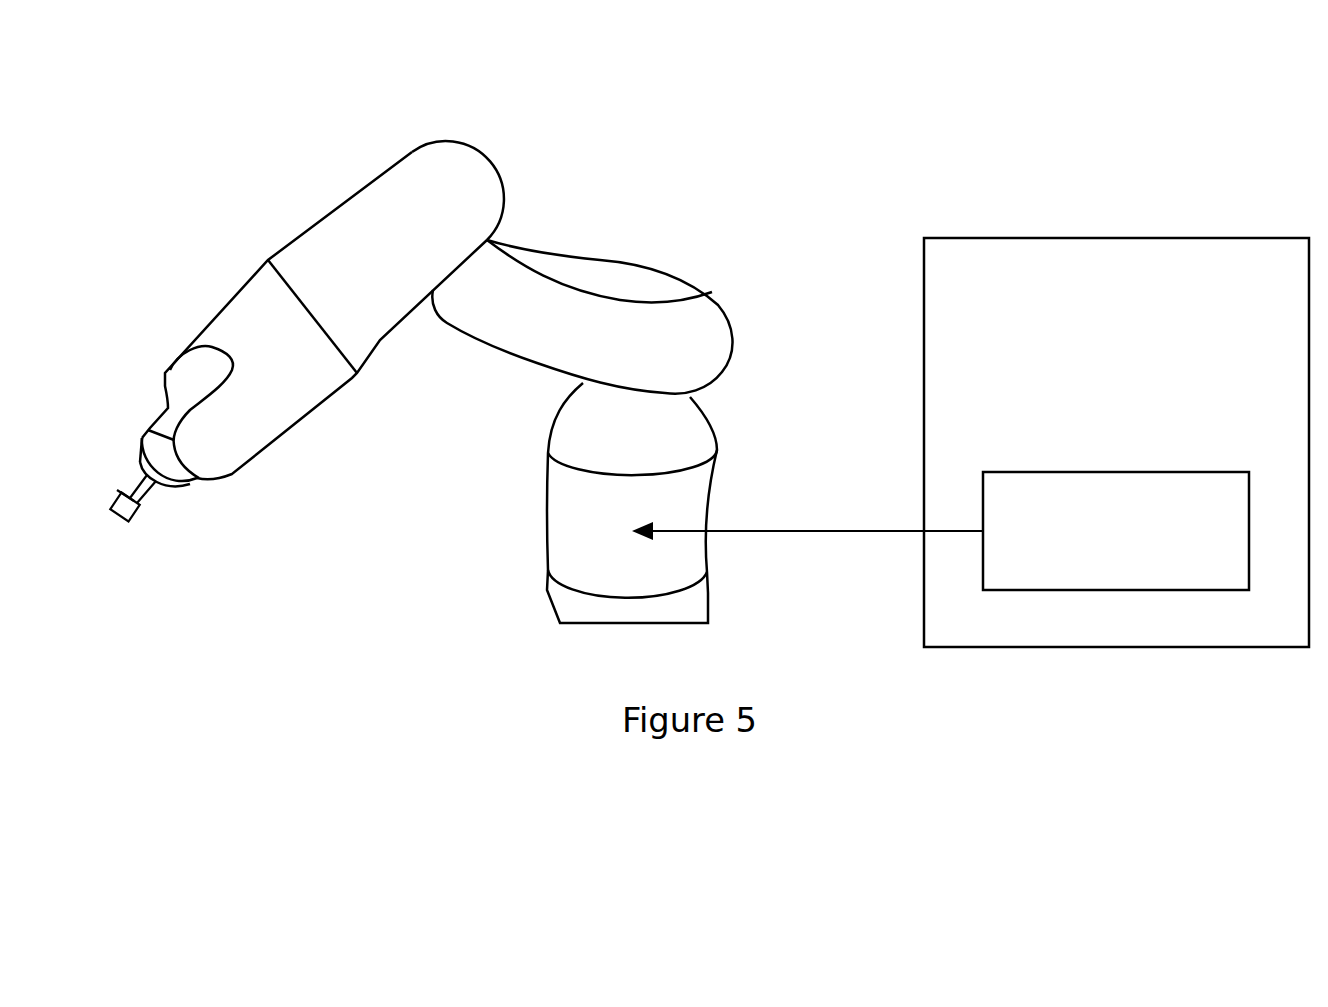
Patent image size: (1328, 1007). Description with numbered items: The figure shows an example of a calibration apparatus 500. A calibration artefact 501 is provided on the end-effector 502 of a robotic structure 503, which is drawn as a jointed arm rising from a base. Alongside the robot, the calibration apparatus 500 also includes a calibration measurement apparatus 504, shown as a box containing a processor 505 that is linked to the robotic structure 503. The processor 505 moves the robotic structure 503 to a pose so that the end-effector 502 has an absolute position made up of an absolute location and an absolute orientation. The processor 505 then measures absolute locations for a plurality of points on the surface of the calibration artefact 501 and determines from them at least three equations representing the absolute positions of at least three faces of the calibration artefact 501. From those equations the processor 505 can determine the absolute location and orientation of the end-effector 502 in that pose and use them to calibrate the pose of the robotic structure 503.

The calibration apparatus 500 is at (735, 95).
The calibration artefact 501 is at (135, 515).
The end-effector 502 is at (145, 463).
The robotic structure 503 is at (495, 308).
The calibration measurement apparatus 504 is at (1252, 235).
The processor 505 is at (1160, 470).